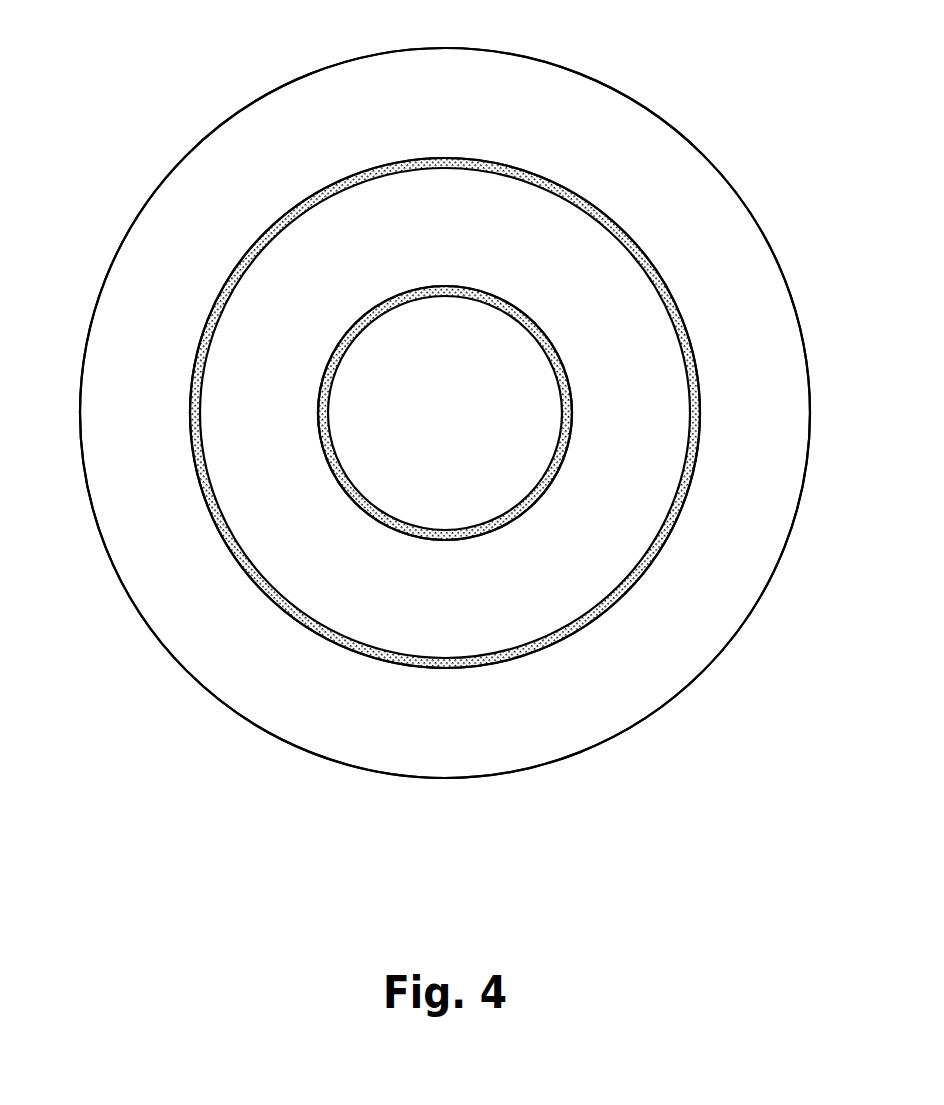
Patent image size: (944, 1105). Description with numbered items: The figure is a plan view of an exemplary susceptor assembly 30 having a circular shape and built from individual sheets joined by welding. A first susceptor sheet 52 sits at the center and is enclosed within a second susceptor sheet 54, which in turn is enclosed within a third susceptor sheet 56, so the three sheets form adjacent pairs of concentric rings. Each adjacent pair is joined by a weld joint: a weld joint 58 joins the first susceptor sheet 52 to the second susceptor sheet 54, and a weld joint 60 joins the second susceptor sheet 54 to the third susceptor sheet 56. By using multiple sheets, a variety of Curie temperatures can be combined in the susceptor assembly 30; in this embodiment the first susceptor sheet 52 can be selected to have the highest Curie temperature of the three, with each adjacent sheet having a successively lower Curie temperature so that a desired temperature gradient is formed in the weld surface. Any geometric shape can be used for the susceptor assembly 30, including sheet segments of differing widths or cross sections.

The susceptor assembly 30 is at (198, 83).
The first susceptor sheet 52 is at (473, 483).
The second susceptor sheet 54 is at (560, 582).
The third susceptor sheet 56 is at (683, 638).
The weld joint 58 is at (517, 310).
The weld joint 60 is at (628, 240).